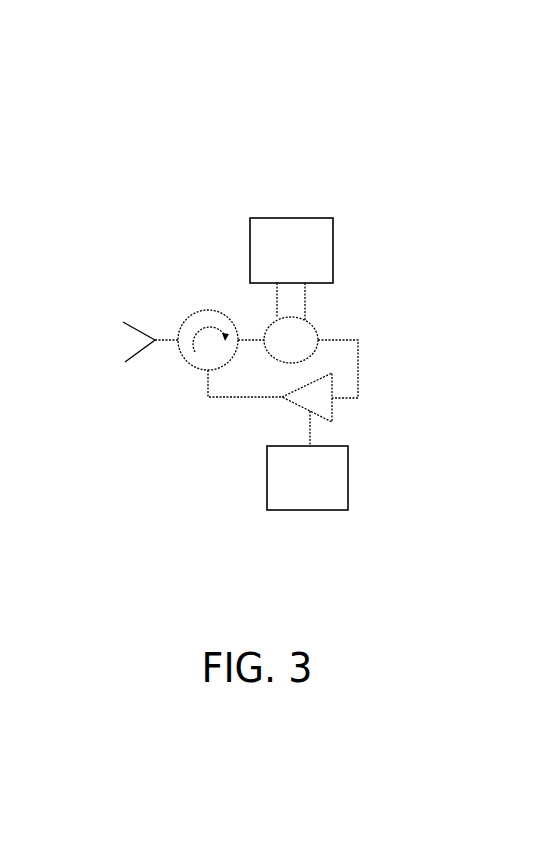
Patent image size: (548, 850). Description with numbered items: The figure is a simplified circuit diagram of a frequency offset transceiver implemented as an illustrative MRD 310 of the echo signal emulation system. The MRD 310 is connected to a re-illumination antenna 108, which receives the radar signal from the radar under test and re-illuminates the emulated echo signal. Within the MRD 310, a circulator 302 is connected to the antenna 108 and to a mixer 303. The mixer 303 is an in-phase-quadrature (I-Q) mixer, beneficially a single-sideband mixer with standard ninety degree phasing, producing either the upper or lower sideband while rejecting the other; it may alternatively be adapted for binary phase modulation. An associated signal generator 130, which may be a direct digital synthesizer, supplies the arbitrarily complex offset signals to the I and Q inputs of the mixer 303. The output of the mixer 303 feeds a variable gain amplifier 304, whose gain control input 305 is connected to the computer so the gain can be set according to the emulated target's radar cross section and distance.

The MRD 310 is at (293, 30).
The re-illumination antenna 108 is at (99, 324).
The signal generator 130 is at (267, 213).
The circulator 302 is at (179, 309).
The mixer 303 is at (339, 318).
The variable gain amplifier 304 is at (354, 419).
The gain control input 305 is at (357, 489).